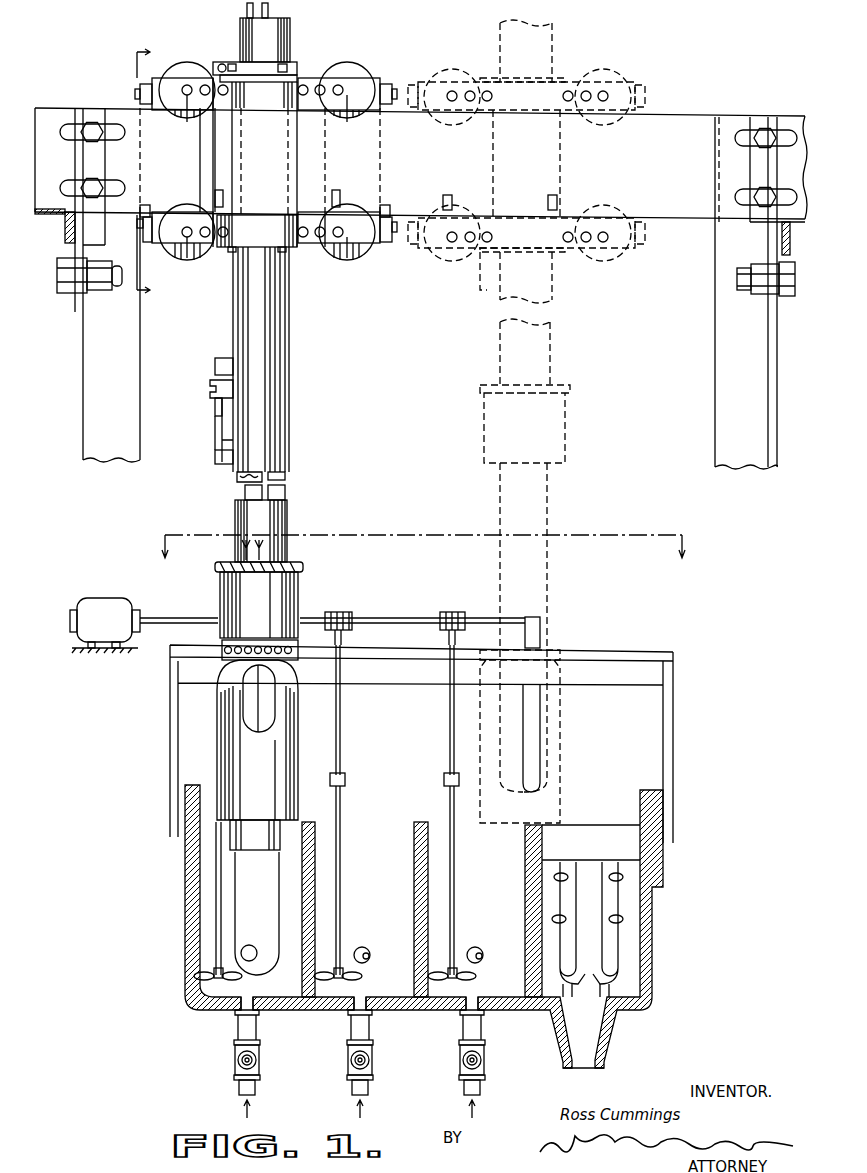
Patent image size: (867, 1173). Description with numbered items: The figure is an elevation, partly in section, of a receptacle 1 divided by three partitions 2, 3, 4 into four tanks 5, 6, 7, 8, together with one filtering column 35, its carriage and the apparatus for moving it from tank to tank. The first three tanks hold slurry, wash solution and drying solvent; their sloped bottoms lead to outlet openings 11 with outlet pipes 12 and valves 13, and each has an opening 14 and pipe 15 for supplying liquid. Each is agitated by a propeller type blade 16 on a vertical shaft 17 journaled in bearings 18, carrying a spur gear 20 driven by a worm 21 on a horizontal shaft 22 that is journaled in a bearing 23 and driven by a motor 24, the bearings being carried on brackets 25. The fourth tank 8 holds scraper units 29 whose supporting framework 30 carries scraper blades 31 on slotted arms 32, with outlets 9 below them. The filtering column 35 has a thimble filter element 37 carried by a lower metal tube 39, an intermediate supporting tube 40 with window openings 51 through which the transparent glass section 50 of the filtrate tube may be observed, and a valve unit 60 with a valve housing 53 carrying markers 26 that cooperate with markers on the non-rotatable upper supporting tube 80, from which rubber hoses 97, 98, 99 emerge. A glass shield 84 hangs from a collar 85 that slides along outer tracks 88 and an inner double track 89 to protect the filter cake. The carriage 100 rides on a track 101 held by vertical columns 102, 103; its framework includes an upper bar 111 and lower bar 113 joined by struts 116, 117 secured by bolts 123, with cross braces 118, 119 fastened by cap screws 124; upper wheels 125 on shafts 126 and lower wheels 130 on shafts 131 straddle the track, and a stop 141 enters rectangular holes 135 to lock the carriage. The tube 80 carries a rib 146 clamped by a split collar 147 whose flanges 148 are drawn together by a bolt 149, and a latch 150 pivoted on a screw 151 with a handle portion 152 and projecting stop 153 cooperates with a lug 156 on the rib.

The receptacle 1 is at (180, 933).
The partition 2 is at (308, 822).
The partition 3 is at (421, 822).
The partition 4 is at (533, 825).
The tank 5 is at (280, 993).
The tank 6 is at (400, 993).
The tank 7 is at (218, 62).
The tank 8 is at (591, 856).
The outlet 9 is at (606, 1052).
The outlet opening 11 is at (248, 1002).
The outlet pipe 12 is at (257, 1028).
The valve 13 is at (262, 1060).
The opening 14 is at (250, 946).
The pipe 15 is at (369, 958).
The propeller type blade 16 is at (205, 988).
The vertical rotating shaft 17 is at (216, 893).
The bearing 18 is at (345, 779).
The spur gear 20 is at (395, 612).
The worm 21 is at (351, 618).
The horizontally extending shaft 22 is at (205, 618).
The bearing 23 is at (540, 622).
The motor 24 is at (108, 604).
The bracket 25 is at (343, 787).
The marker 26 is at (236, 542).
The scraper unit 29 is at (606, 855).
The supporting framework 30 is at (634, 957).
The scraper blade 31 is at (606, 946).
The slotted arm 32 is at (606, 880).
The filtering column 35 is at (296, 554).
The thimble filter element 37 is at (232, 872).
The lower metal tube 39 is at (233, 838).
The intermediate supporting metal tube 40 is at (233, 712).
The transparent glass section 50 is at (276, 714).
The window opening 51 is at (240, 731).
The valve housing 53 is at (218, 583).
The valve unit 60 is at (306, 592).
The upper supporting tube 80 is at (287, 513).
The glass shield 84 is at (299, 751).
The collar 85 is at (300, 658).
The outer track 88 is at (431, 685).
The inner double track 89 is at (432, 658).
The rubber hose 97 is at (237, 480).
The rubber hose 98 is at (245, 496).
The rubber hose 99 is at (285, 493).
The carriage 100 is at (340, 159).
The track 101 is at (684, 121).
The vertical column 102 is at (140, 399).
The vertical column 103 is at (716, 393).
The upper bar 111 is at (372, 80).
The lower bar 113 is at (166, 245).
The strut 116 is at (205, 153).
The strut 117 is at (325, 135).
The upper cross brace 118 is at (140, 90).
The lower cross brace 119 is at (145, 236).
The bolt 123 is at (306, 84).
The cap screw 124 is at (135, 98).
The upper double-flanged wheel 125 is at (175, 69).
The horizontal shaft 126 is at (186, 104).
The lower double-flanged wheel 130 is at (187, 206).
The shaft 131 is at (188, 258).
The rectangular hole 135 is at (225, 204).
The stop 141 is at (224, 185).
The rib 146 is at (233, 334).
The split collar 147 is at (290, 66).
The flange 148 is at (220, 62).
The bolt 149 is at (216, 82).
The latch 150 is at (208, 439).
The screw 151 is at (210, 392).
The handle portion 152 is at (215, 457).
The projecting stop 153 is at (216, 406).
The lug 156 is at (215, 365).